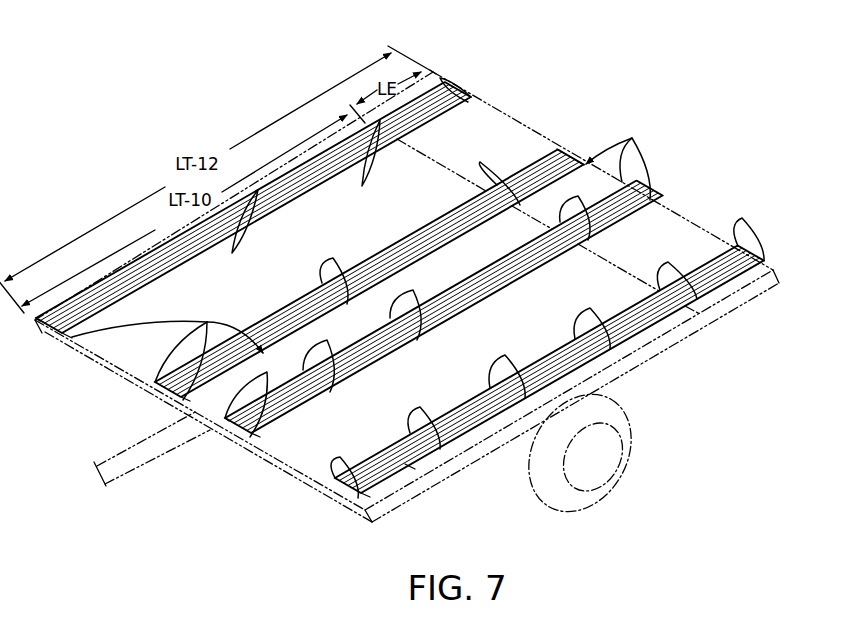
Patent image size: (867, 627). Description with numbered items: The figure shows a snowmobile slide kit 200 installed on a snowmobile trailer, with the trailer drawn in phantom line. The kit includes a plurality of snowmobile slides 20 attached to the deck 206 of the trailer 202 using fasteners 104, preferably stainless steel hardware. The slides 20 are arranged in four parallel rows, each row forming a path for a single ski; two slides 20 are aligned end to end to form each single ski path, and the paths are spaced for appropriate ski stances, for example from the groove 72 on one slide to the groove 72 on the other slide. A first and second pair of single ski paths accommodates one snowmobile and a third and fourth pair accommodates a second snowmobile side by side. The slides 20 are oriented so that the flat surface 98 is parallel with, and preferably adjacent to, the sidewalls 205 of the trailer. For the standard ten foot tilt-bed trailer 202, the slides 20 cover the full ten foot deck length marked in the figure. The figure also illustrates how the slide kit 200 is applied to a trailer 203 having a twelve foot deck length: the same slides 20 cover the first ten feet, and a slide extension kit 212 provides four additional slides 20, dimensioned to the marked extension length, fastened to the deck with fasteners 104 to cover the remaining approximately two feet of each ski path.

The snowmobile slide 20 is at (407, 136).
The groove 72 is at (62, 336).
The flat surface 98 is at (37, 322).
The fasteners 104 is at (442, 79).
The snowmobile slide kit 200 is at (111, 196).
The snowmobile trailer 202 is at (494, 452).
The snowmobile trailer 203 is at (744, 308).
The sidewall 205 is at (433, 72).
The deck 206 is at (99, 362).
The slide extension kit 212 is at (579, 132).